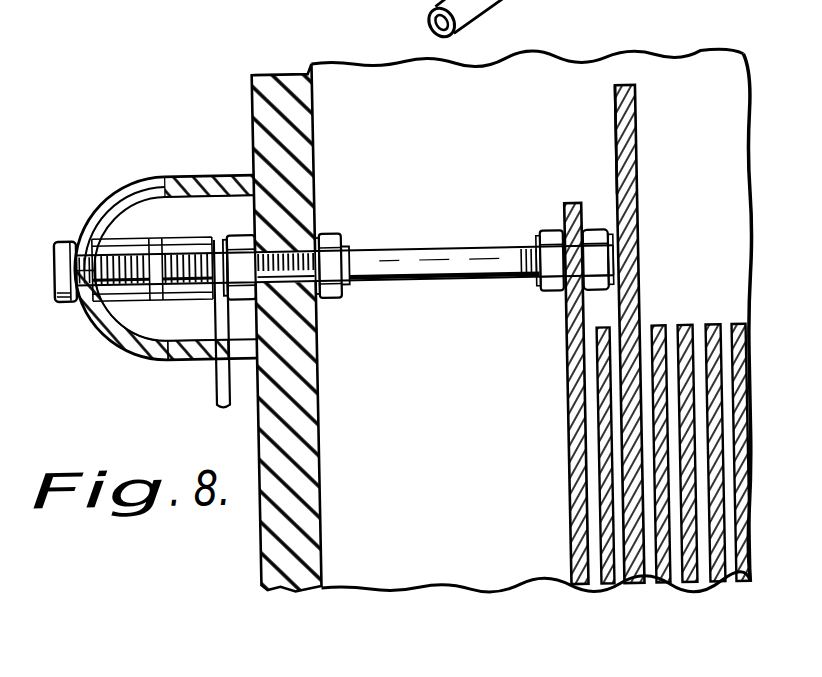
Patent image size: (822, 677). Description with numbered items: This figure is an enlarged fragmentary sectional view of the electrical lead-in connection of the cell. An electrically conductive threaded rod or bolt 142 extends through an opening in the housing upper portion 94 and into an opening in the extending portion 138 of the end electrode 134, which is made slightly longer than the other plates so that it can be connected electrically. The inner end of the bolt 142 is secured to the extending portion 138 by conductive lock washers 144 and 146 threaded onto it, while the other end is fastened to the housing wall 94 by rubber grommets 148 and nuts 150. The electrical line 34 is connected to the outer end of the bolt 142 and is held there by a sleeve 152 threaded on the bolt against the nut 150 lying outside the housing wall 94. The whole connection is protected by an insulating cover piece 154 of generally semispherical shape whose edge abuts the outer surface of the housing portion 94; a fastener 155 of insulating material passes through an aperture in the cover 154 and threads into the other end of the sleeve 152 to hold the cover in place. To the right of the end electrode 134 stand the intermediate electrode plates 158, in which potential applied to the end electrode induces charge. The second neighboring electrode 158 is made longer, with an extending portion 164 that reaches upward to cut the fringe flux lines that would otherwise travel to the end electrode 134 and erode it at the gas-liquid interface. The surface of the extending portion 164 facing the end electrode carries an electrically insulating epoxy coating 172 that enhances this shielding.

The electrical line 34 is at (208, 384).
The housing upper portion 94 is at (286, 75).
The end electrode 134 is at (562, 574).
The extending portion 138 is at (566, 343).
The threaded rod or bolt 142 is at (444, 240).
The conductive lock washer 144 is at (561, 235).
The conductive lock washer 146 is at (548, 292).
The rubber grommet 148 is at (249, 232).
The nut 150 is at (234, 229).
The sleeve 152 is at (146, 240).
The insulating cover piece 154 is at (114, 192).
The fastener 155 is at (68, 300).
The electrode plate 158 is at (597, 400).
The extending portion 164 is at (629, 91).
The coating 172 is at (620, 103).